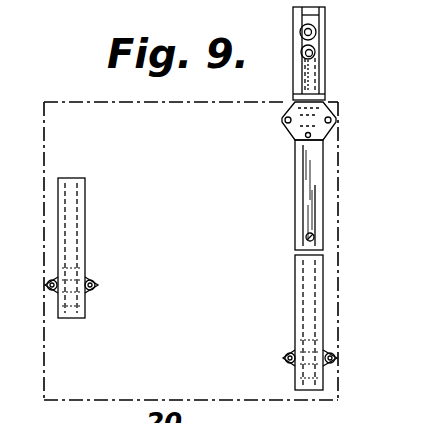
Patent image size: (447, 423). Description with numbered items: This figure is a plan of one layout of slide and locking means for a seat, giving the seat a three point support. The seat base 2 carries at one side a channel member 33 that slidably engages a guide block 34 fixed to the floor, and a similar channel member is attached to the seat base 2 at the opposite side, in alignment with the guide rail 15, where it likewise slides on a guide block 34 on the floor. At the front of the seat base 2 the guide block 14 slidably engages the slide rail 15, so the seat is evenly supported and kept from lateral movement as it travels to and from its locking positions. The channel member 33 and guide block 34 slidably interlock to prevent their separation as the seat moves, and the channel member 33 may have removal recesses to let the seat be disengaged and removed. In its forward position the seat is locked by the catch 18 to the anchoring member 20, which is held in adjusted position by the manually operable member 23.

The seat base 2 is at (191, 251).
The guide block 14 is at (285, 123).
The guide rail 15 is at (297, 204).
The catch 18 is at (301, 54).
The anchoring member 20 is at (325, 13).
The manually operable member 23 is at (300, 32).
The channel member 33 is at (297, 297).
The guide block 34 is at (285, 358).